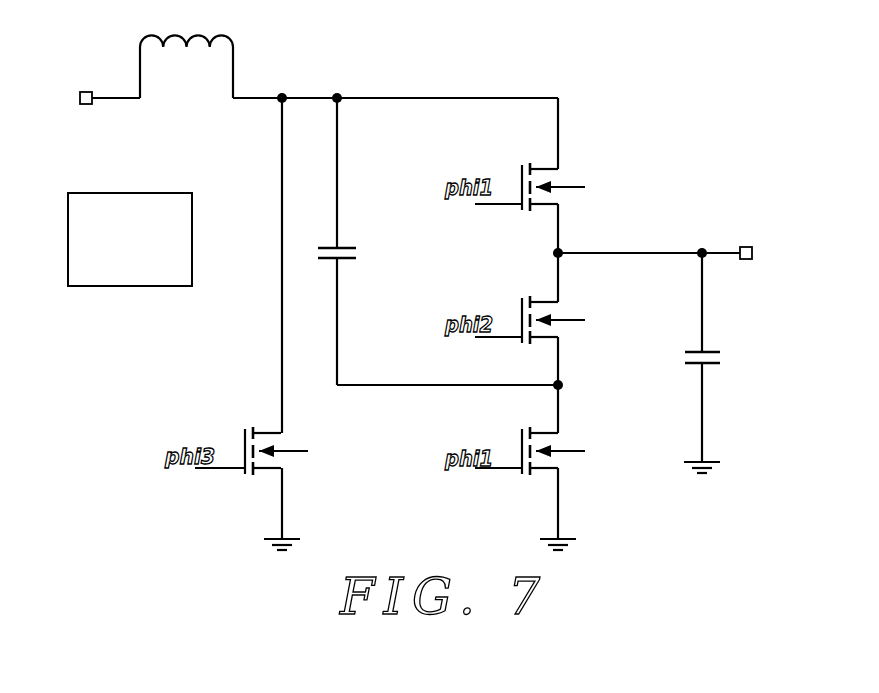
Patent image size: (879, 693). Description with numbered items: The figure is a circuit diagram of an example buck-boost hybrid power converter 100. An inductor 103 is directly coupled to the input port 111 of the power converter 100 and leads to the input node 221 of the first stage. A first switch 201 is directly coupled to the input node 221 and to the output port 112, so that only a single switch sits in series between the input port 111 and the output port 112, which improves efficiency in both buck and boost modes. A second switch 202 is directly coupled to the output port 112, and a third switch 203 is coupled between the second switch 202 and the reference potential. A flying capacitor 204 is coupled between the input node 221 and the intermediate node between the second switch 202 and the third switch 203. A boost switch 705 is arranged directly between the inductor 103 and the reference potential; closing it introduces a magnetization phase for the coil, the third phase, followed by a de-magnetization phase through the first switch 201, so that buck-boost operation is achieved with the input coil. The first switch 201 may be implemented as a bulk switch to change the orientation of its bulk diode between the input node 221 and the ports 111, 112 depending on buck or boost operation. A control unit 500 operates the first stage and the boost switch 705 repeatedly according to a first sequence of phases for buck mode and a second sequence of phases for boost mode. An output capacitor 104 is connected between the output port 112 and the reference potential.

The buck-boost hybrid converter 100 is at (165, 402).
The inductor 103 is at (187, 87).
The output capacitor COUT 104 is at (683, 357).
The input port 111 is at (85, 106).
The output port 112 is at (745, 260).
The first switch 201 is at (575, 180).
The second switch 202 is at (575, 312).
The third switch 203 is at (575, 444).
The flying capacitor 204 is at (356, 250).
The input node 221 is at (353, 62).
The control unit 500 is at (140, 287).
The boost switch 705 is at (295, 442).